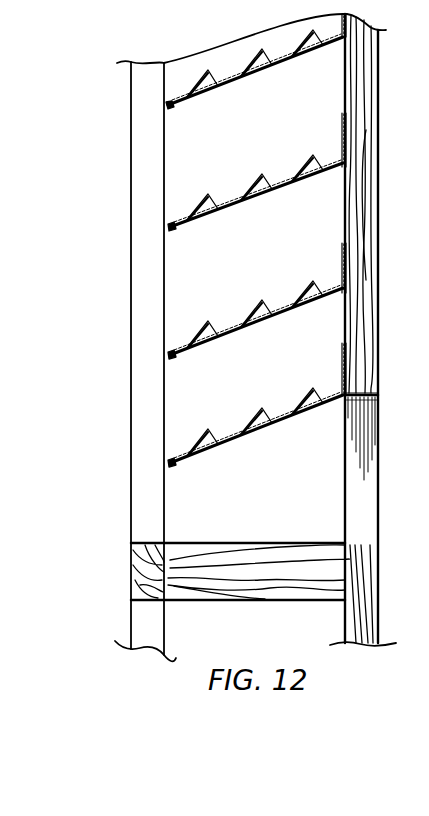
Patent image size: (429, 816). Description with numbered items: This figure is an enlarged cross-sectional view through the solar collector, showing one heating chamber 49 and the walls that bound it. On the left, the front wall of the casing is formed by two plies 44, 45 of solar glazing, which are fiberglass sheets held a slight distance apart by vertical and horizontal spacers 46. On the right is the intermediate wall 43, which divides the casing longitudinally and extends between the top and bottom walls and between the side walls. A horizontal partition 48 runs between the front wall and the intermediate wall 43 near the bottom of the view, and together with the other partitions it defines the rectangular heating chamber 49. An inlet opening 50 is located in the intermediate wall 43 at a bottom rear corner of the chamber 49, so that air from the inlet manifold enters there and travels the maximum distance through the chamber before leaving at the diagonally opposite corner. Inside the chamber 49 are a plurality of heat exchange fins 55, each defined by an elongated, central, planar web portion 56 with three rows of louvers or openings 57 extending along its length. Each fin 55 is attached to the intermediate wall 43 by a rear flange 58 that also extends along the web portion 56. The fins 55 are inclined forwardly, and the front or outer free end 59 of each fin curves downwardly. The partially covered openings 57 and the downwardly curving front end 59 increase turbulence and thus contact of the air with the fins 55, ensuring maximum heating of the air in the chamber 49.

The intermediate wall 43 is at (360, 263).
The ply of solar glazing 44 is at (128, 453).
The ply of solar glazing 45 is at (163, 403).
The spacer 46 is at (165, 562).
The horizontal partition 48 is at (228, 575).
The heating chamber 49 is at (313, 350).
The inlet opening 50 is at (362, 514).
The heat exchange fin 55 is at (180, 94).
The web portion 56 is at (248, 197).
The louvers or openings 57 is at (260, 70).
The rear flange 58 is at (342, 140).
The front free end 59 is at (168, 106).